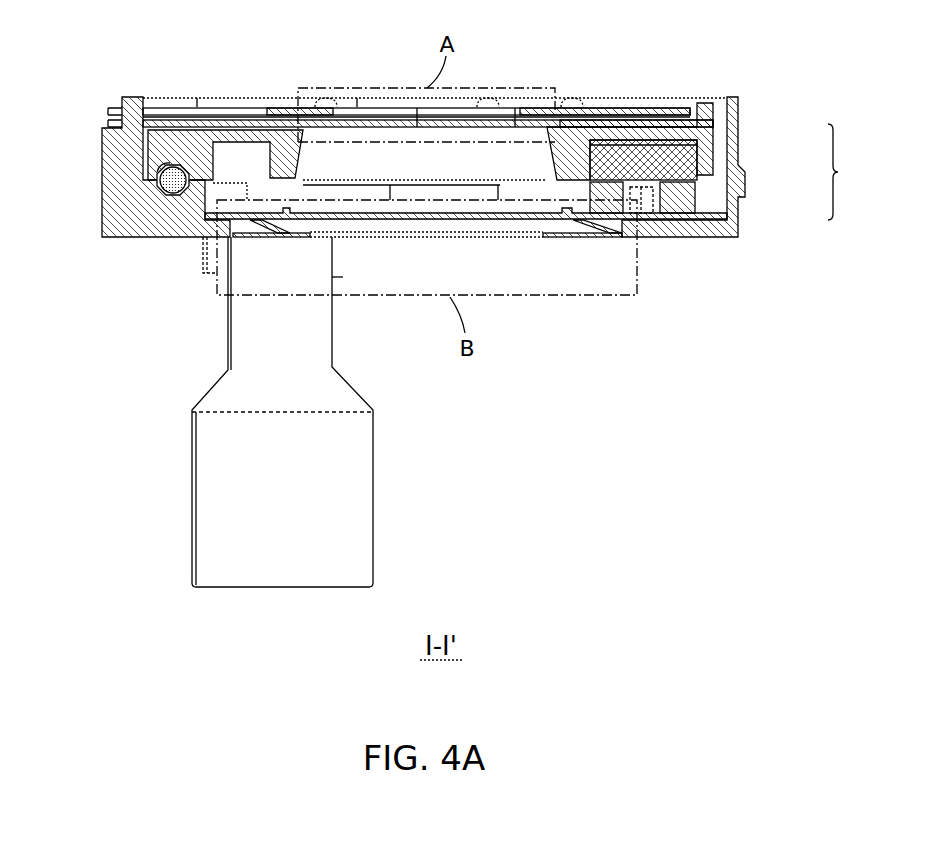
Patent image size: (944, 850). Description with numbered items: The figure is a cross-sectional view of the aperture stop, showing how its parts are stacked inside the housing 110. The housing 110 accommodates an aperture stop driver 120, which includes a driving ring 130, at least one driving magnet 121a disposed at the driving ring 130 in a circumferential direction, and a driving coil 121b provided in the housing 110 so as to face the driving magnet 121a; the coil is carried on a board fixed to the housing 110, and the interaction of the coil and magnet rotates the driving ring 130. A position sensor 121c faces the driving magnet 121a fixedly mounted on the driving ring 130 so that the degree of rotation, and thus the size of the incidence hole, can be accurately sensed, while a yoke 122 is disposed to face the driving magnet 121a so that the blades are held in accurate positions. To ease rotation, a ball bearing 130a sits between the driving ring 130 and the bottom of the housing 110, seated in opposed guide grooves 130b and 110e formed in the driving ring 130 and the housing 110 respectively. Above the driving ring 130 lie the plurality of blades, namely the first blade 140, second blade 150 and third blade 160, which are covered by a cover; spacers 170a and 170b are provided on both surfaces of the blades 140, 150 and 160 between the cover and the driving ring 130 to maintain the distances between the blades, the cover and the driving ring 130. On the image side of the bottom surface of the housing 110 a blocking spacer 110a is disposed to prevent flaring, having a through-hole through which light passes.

The housing 110 is at (740, 108).
The blocking spacer 110a is at (556, 238).
The guide groove 110e is at (158, 190).
The aperture stop driver 120 is at (853, 172).
The driving magnet 121a is at (690, 162).
The driving coil 121b is at (690, 198).
The position sensor 121c is at (727, 213).
The yoke 122 is at (227, 222).
The driving ring 130 is at (705, 128).
The ball bearing 130a is at (177, 190).
The guide groove 130b is at (163, 171).
The first blade 140 is at (277, 106).
The second blade 150 is at (288, 106).
The third blade 160 is at (317, 107).
The spacer 170a is at (605, 107).
The spacer 170b is at (623, 108).